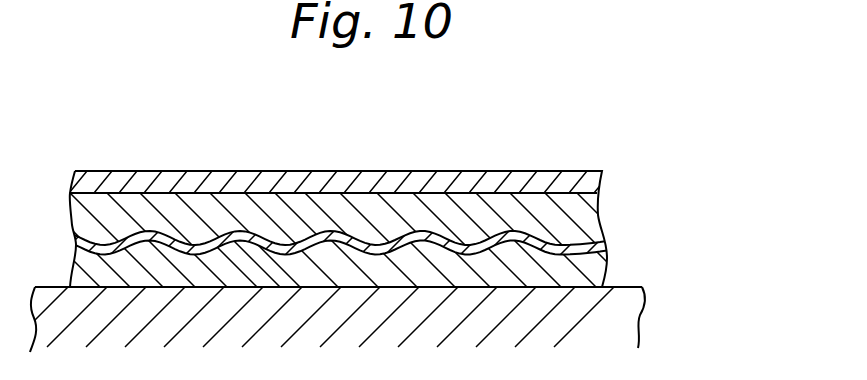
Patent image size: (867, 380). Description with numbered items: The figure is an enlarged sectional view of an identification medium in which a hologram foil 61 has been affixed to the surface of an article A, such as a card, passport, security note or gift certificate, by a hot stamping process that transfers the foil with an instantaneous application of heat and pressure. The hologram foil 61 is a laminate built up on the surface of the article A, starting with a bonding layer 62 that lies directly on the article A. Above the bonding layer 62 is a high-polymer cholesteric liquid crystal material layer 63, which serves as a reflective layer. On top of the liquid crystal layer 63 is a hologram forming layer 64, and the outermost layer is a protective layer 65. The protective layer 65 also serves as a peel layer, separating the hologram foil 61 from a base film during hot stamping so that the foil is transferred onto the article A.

The hologram foil 61 is at (422, 118).
The bonding layer 62 is at (607, 257).
The high-polymer cholesteric liquid crystal material layer 63 is at (600, 242).
The hologram forming layer 64 is at (597, 218).
The protective layer 65 is at (545, 182).
The article A is at (632, 324).